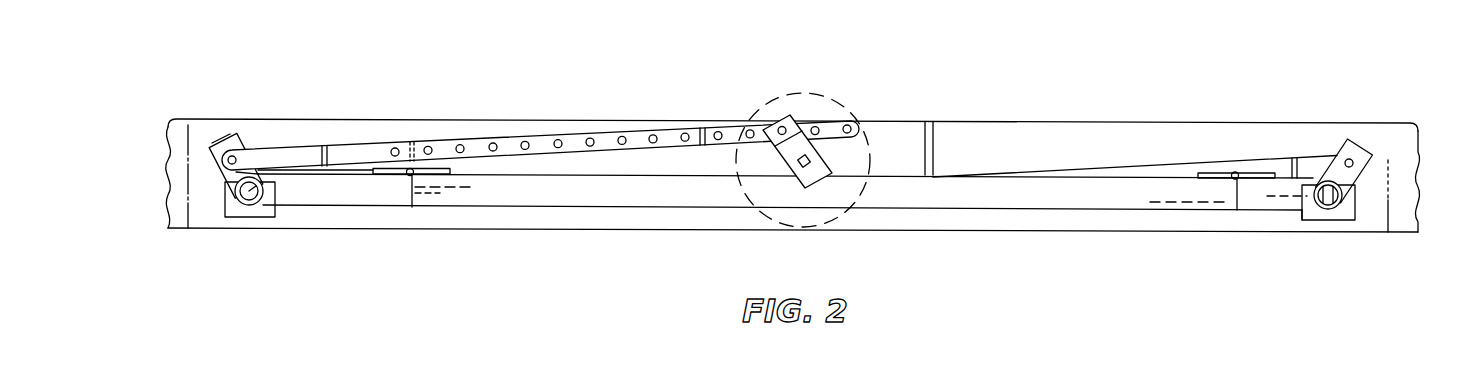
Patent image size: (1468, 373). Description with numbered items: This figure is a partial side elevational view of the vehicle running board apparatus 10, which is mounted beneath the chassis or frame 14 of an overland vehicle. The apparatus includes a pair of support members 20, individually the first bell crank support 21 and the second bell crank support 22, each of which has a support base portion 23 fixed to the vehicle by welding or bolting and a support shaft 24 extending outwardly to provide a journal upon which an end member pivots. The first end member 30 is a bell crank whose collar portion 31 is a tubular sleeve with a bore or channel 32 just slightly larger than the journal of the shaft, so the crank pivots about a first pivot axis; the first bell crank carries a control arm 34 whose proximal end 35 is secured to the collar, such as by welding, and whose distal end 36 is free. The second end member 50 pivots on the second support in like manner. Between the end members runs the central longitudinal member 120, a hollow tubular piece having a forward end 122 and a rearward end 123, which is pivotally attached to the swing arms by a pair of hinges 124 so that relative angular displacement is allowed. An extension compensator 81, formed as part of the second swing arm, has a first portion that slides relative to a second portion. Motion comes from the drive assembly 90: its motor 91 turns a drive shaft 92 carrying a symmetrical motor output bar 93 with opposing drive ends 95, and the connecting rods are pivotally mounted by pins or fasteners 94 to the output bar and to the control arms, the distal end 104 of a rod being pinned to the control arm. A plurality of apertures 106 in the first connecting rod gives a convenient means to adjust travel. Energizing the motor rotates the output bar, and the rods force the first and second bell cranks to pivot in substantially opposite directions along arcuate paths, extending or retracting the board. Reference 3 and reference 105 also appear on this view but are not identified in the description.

The running board apparatus 10 is at (801, 187).
The chassis or frame 14 is at (1048, 147).
The support members 20 is at (217, 233).
The first bell crank support 21 is at (214, 206).
The second bell crank support 22 is at (1370, 208).
The support base portion 23 is at (1345, 221).
The support shaft 24 is at (258, 205).
The detail region 3 is at (236, 172).
The first end member 30 is at (247, 208).
The collar portion 31 is at (187, 130).
The bore or channel 32 is at (264, 189).
The control arm 34 is at (223, 177).
The proximal end 35 is at (248, 174).
The distal end 36 is at (218, 144).
The second end member 50 is at (1322, 228).
The extension compensator 81 is at (1250, 193).
The drive assembly 90 is at (846, 67).
The motor 91 is at (770, 113).
The drive shaft 92 is at (803, 172).
The motor output bar 93 is at (794, 119).
The pins or fasteners 94 is at (779, 126).
The drive ends 95 is at (789, 118).
The distal end 104 is at (540, 103).
The second bracket 105 is at (1352, 160).
The apertures 106 is at (652, 140).
The central longitudinal member 120 is at (785, 192).
The forward end 122 is at (1197, 190).
The rearward end 123 is at (441, 197).
The hinges 124 is at (407, 175).